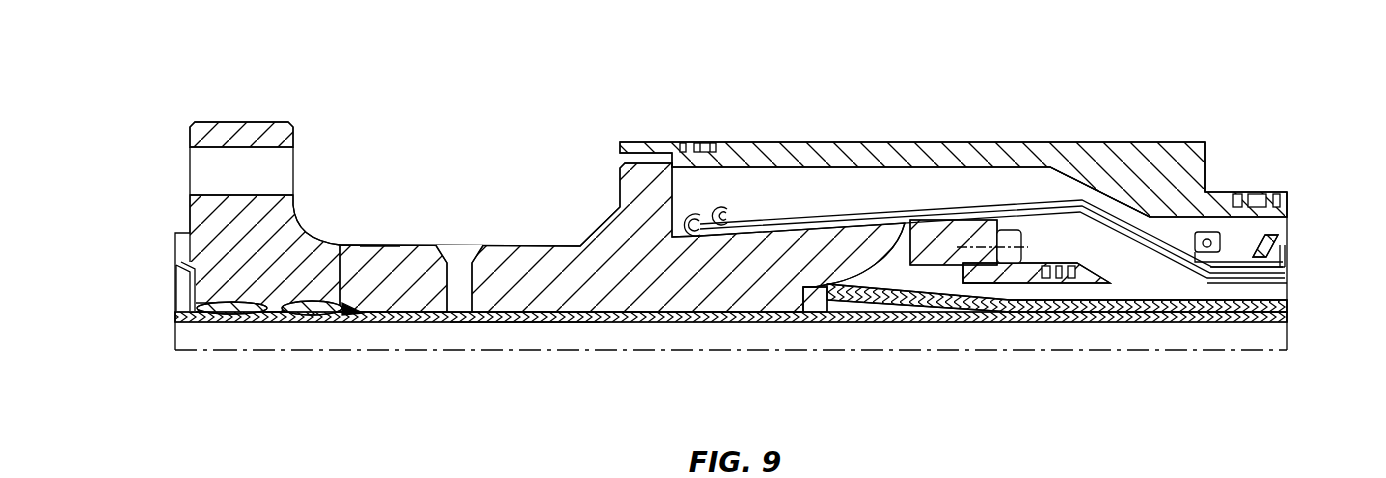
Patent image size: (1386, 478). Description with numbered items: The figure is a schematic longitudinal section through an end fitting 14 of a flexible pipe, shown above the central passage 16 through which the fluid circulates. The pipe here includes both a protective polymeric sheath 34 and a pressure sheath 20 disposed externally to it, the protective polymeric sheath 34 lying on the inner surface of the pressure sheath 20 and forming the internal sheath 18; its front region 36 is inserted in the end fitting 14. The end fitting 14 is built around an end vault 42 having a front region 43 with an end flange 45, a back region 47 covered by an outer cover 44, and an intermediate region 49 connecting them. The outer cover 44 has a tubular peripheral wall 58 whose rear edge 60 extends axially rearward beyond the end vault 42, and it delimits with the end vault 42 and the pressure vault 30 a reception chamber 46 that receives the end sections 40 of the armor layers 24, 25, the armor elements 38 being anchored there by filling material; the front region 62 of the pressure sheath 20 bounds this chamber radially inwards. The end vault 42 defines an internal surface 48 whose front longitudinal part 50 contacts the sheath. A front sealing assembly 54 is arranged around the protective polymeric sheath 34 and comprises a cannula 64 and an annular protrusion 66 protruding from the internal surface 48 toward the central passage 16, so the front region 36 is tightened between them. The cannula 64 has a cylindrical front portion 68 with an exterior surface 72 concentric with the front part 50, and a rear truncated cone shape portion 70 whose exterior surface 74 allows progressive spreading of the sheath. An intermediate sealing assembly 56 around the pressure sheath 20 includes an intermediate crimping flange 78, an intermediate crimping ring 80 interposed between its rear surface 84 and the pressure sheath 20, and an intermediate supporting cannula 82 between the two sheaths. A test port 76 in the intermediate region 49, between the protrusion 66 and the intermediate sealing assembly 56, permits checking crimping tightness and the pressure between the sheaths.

The end fitting 14 is at (797, 67).
The central passage 16 is at (1213, 352).
The internal sheath 18 is at (477, 323).
The pressure sheath 20 is at (1273, 324).
The armor layer 24 is at (1283, 290).
The second armor layer 25 is at (1287, 272).
The pressure vault 30 is at (1283, 312).
The protective polymeric sheath 34 is at (527, 323).
The front region 36 is at (353, 311).
The armor elements 38 is at (1023, 203).
The end sections 40 is at (743, 220).
The end vault 42 is at (218, 220).
The front region 43 is at (313, 172).
The outer cover 44 is at (862, 151).
The end flange 45 is at (243, 121).
The reception chamber 46 is at (830, 192).
The back region 47 is at (889, 92).
The internal surface 48 is at (382, 318).
The intermediate region 49 is at (532, 207).
The front longitudinal part 50 is at (313, 300).
The front sealing assembly 54 is at (256, 331).
The intermediate sealing assembly 56 is at (943, 252).
The tubular peripheral wall 58 is at (1090, 152).
The rear edge 60 is at (1193, 176).
The front region 62 is at (1000, 301).
The cannula 64 is at (222, 317).
The annular protrusion 66 is at (264, 304).
The cylindrical front portion 68 is at (281, 320).
The rear truncated cone shape portion 70 is at (331, 322).
The exterior surface 72 is at (189, 305).
The exterior surface 74 is at (380, 272).
The test port 76 is at (460, 270).
The intermediate crimping flange 78 is at (983, 263).
The intermediate crimping ring 80 is at (877, 302).
The intermediate supporting cannula 82 is at (907, 300).
The rear surface 84 is at (909, 267).